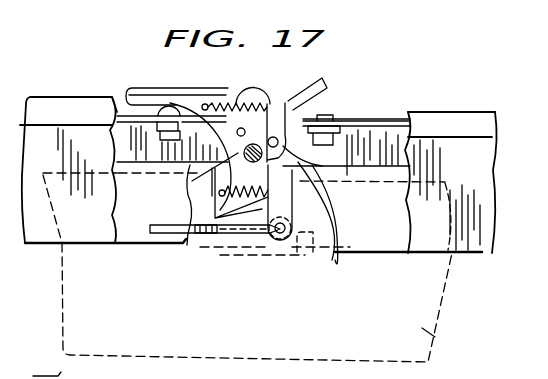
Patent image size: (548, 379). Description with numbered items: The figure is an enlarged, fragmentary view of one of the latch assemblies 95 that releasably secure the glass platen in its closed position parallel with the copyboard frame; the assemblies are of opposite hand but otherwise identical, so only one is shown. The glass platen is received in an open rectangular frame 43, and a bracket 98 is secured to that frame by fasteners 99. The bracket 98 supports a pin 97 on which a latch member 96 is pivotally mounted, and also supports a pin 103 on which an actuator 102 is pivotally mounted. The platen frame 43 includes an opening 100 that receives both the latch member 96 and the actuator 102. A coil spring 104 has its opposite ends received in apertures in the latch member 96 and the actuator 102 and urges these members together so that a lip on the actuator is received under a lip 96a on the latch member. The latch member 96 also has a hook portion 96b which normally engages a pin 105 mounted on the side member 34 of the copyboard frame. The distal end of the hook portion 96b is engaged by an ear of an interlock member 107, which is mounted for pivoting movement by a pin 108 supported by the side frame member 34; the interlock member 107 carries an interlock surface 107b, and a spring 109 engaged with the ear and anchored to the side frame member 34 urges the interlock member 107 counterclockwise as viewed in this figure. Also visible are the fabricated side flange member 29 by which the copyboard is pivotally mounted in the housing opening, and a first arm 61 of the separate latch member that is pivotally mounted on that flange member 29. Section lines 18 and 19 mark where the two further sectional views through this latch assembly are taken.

The section line 18- 18 is at (297, 72).
The section line 19- 19 is at (97, 75).
The side flange member 29 is at (437, 338).
The side member 34 is at (478, 172).
The open rectangular frame 43 is at (390, 140).
The first arm 61 is at (203, 234).
The latch assembly 95 is at (182, 65).
The latch member 96 is at (187, 100).
The lip 96a is at (288, 95).
The hook portion 96b is at (188, 224).
The pin 97 is at (243, 162).
The bracket 98 is at (300, 147).
The fasteners 99 is at (312, 117).
The opening 100 is at (237, 133).
The actuator 102 is at (328, 92).
The pin 103 is at (320, 165).
The coil spring 104 is at (235, 92).
The pin 105 is at (332, 185).
The interlock member 107 is at (329, 244).
The interlock surface 107b is at (212, 242).
The pin 108 is at (278, 236).
The spring 109 is at (238, 236).